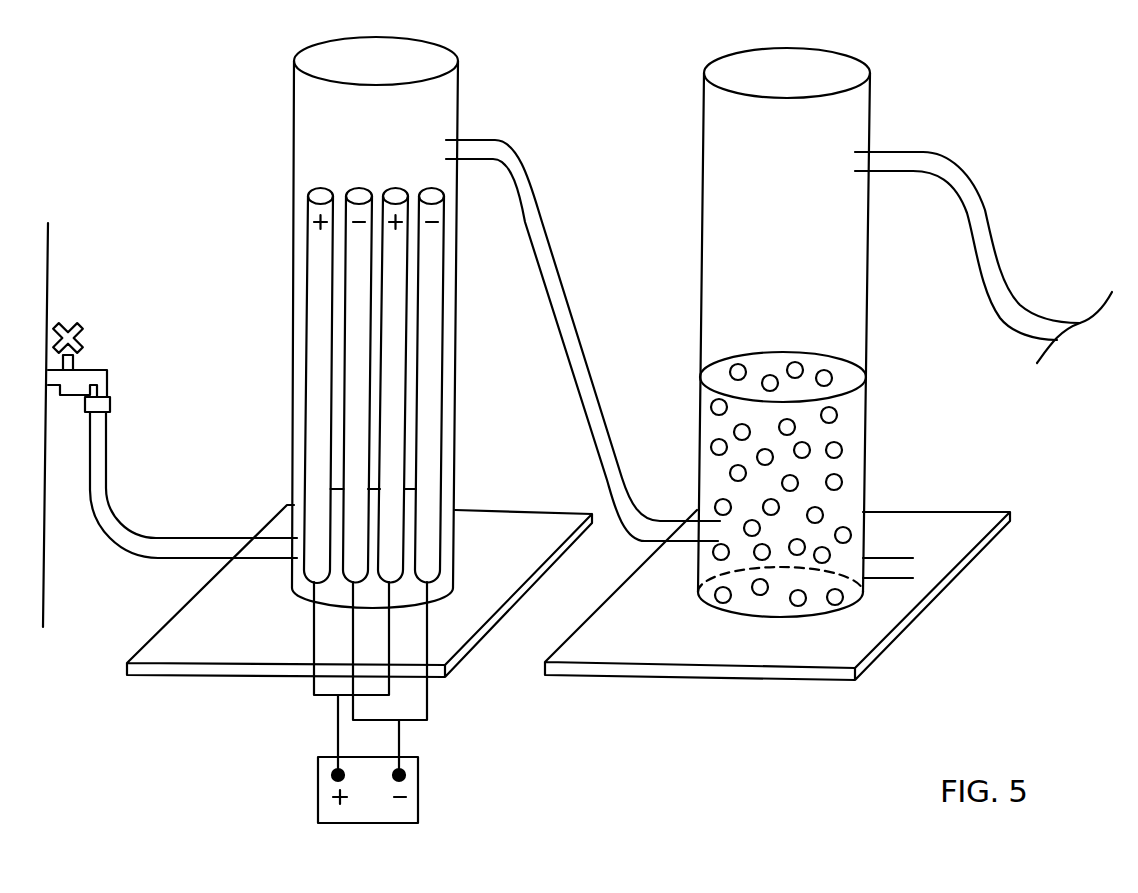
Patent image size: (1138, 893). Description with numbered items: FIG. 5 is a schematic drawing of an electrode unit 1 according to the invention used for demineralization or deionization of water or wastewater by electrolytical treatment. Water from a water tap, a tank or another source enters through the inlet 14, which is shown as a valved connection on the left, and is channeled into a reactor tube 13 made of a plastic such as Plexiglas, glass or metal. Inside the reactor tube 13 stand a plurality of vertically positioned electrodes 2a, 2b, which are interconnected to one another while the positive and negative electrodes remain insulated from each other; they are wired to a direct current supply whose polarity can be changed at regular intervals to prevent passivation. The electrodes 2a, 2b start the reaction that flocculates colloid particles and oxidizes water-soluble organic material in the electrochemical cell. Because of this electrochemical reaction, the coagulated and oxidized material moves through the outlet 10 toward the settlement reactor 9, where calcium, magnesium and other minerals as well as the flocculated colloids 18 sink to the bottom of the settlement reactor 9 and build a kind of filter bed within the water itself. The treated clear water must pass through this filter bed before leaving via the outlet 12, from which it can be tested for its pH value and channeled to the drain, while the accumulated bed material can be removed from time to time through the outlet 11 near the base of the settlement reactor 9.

The electrode unit 1 is at (418, 784).
The electrode 2a is at (425, 703).
The electrode 2b is at (310, 687).
The settlement reactor 9 is at (865, 128).
The outlet 10 is at (472, 137).
The outlet 11 is at (888, 580).
The outlet 12 is at (895, 172).
The reactor tube 13 is at (293, 115).
The inlet 14 is at (90, 368).
The flocculated colloids 18 is at (835, 497).